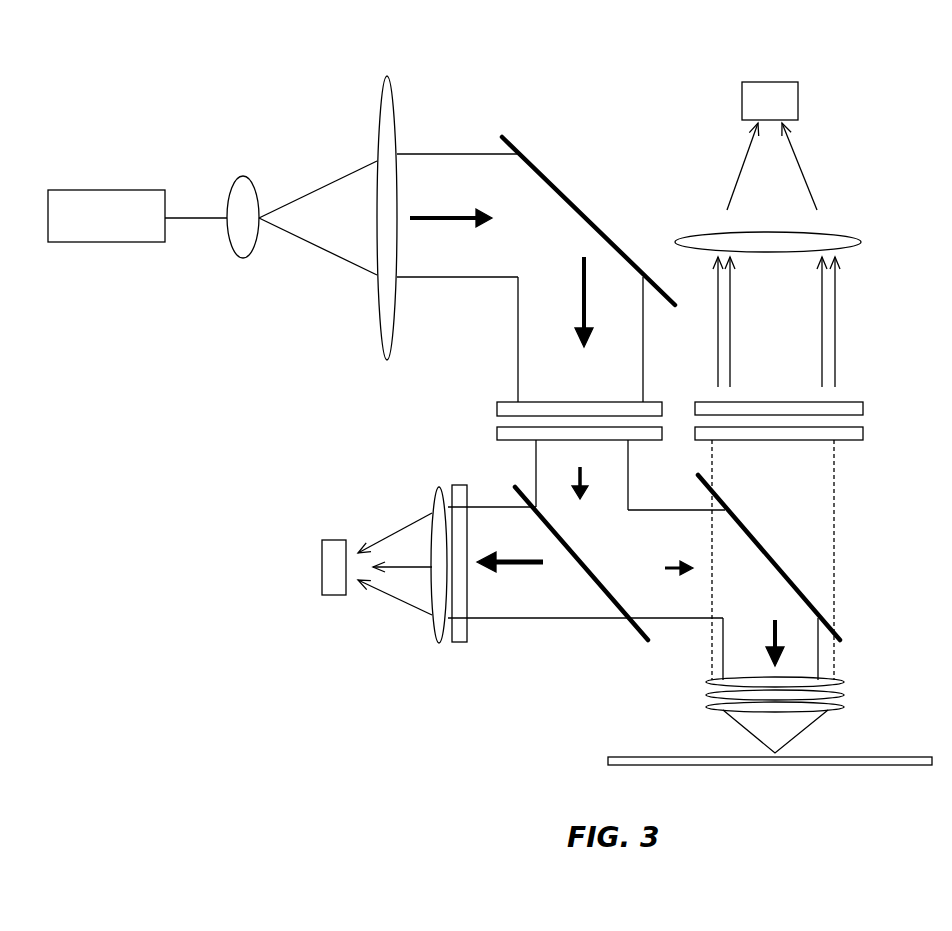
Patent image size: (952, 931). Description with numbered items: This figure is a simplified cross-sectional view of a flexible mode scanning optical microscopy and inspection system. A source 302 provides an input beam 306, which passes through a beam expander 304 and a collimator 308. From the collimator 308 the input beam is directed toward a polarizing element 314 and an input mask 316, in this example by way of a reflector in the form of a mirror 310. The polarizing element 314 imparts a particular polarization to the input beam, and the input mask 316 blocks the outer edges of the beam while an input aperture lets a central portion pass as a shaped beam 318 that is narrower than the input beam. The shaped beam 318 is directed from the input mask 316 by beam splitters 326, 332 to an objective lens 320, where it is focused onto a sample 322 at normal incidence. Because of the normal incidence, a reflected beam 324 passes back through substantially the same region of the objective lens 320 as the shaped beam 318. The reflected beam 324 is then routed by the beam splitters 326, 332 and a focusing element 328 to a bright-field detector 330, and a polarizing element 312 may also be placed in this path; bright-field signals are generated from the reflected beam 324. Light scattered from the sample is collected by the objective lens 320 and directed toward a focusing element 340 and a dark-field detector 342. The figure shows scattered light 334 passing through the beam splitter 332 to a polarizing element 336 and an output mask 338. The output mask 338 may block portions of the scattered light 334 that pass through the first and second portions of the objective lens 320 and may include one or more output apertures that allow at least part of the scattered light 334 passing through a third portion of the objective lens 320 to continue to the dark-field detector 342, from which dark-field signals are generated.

The source 302 is at (106, 216).
The beam expander 304 is at (243, 258).
The input beam 306 is at (207, 217).
The collimator 308 is at (386, 76).
The mirror 310 is at (583, 211).
The polarizing element 312 is at (460, 645).
The polarizing element 314 is at (497, 403).
The input mask 316 is at (497, 428).
The shaped beam 318 is at (536, 468).
The objective lens 320 is at (845, 690).
The sample 322 is at (608, 757).
The reflected beam 324 is at (723, 680).
The beam splitter 326 is at (630, 626).
The focusing element 328 is at (440, 645).
The bright-field detector 330 is at (322, 540).
The beam splitter 332 is at (842, 642).
The scattered light 334 is at (834, 536).
The polarizing element 336 is at (863, 429).
The output mask 338 is at (863, 403).
The focusing element 340 is at (862, 241).
The dark-field detector 342 is at (798, 82).